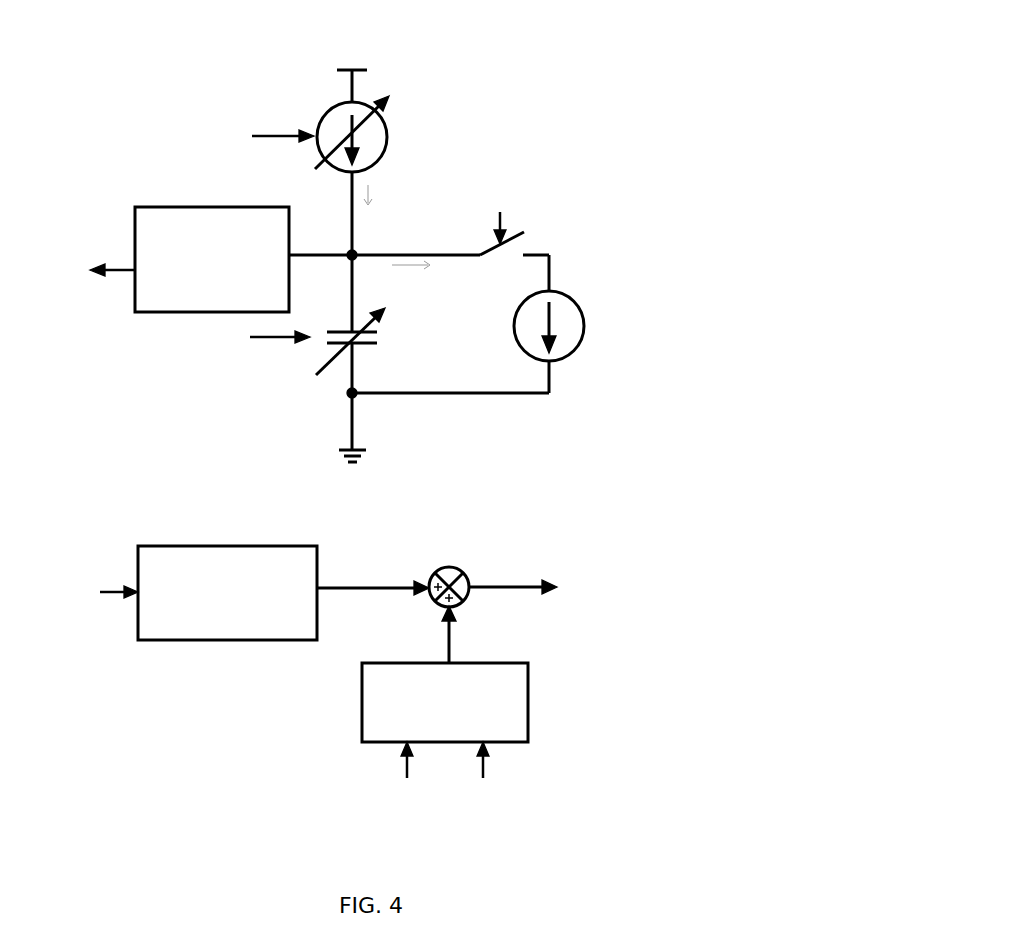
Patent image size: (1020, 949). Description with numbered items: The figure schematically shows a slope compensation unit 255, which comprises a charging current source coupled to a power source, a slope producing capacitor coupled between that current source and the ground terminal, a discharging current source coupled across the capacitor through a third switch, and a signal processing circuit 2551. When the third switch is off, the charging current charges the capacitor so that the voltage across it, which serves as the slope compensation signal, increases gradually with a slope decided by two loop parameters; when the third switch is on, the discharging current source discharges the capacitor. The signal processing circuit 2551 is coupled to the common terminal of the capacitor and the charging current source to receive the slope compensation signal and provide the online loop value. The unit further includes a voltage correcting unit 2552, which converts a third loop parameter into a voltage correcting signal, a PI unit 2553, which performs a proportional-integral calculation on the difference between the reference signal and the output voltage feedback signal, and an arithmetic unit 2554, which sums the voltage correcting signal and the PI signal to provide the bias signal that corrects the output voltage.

The slope compensation unit 255 is at (641, 70).
The signal processing circuit 2551 is at (264, 197).
The voltage correcting unit 2552 is at (258, 527).
The PI unit 2553 is at (528, 700).
The arithmetic unit 2554 is at (462, 573).